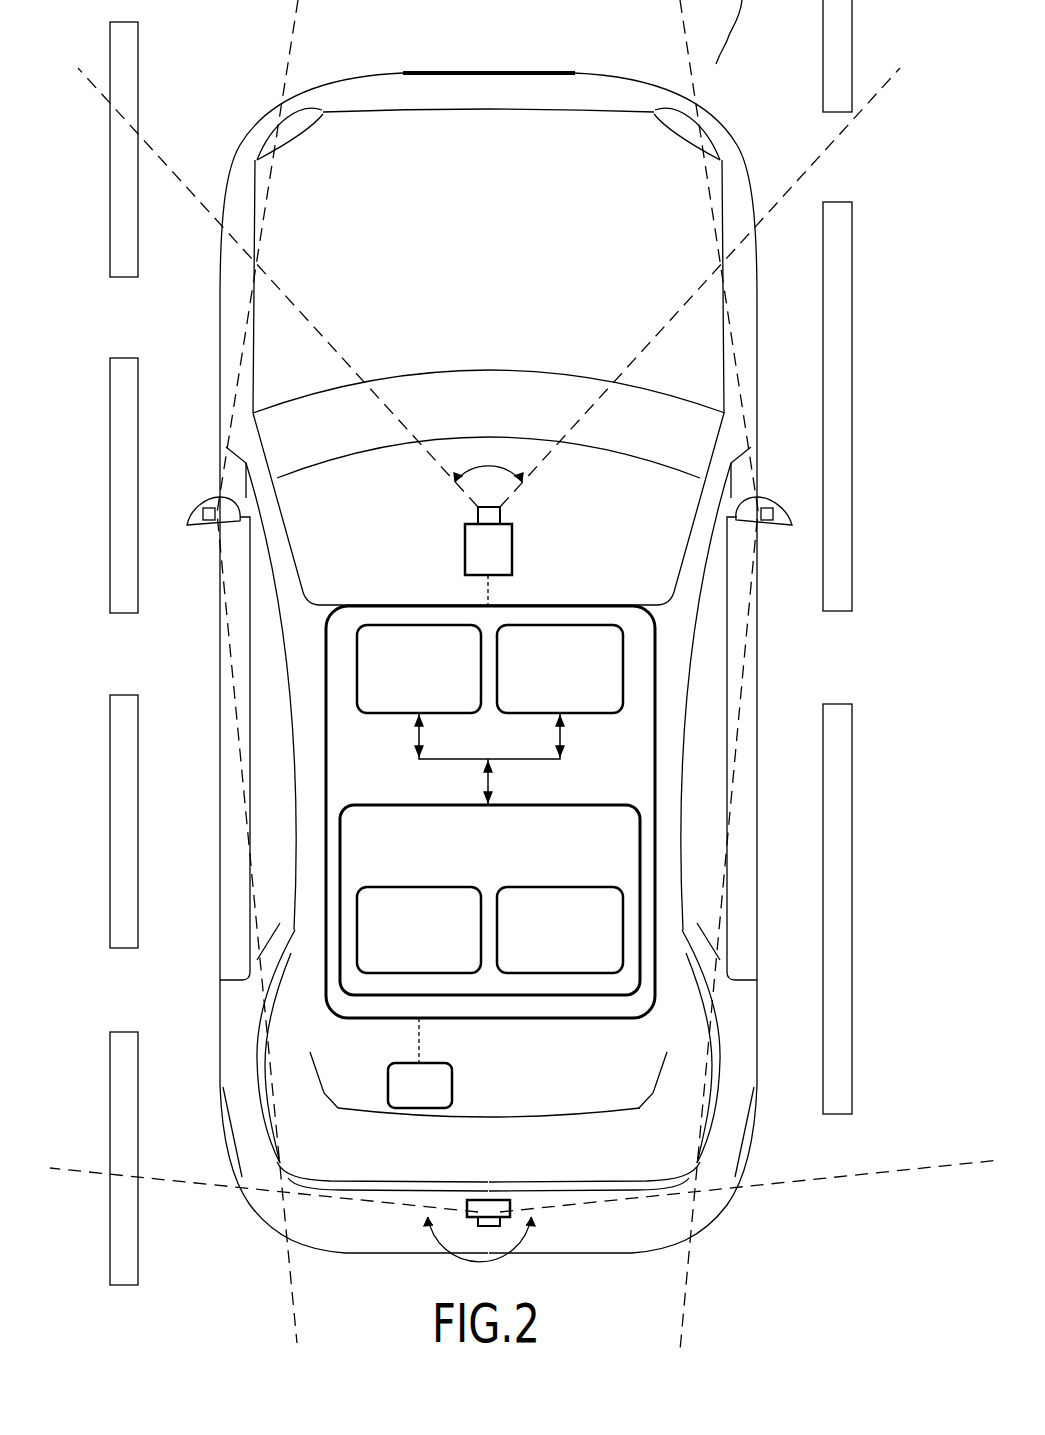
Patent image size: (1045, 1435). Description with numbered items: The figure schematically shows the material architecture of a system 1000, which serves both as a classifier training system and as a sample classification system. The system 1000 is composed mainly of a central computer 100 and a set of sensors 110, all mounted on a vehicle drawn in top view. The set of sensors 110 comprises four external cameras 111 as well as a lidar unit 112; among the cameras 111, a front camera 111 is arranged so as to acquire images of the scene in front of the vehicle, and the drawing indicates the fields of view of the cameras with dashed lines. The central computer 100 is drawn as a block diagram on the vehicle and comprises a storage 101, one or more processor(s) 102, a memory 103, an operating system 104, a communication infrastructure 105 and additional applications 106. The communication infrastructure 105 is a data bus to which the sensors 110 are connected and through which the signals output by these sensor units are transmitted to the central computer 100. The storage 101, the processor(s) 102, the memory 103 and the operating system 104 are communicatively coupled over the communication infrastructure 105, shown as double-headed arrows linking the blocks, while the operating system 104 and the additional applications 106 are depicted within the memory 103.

The central computer 100 is at (478, 1053).
The storage 101 is at (402, 702).
The processor(s) 102 is at (543, 702).
The memory 103 is at (468, 863).
The operating system 104 is at (399, 964).
The communication infrastructure 105 is at (537, 760).
The additional applications 106 is at (543, 962).
The set of sensors 110 is at (207, 986).
The external cameras 111 is at (512, 547).
The lidar unit 112 is at (395, 1090).
The system 1000 is at (351, 1218).